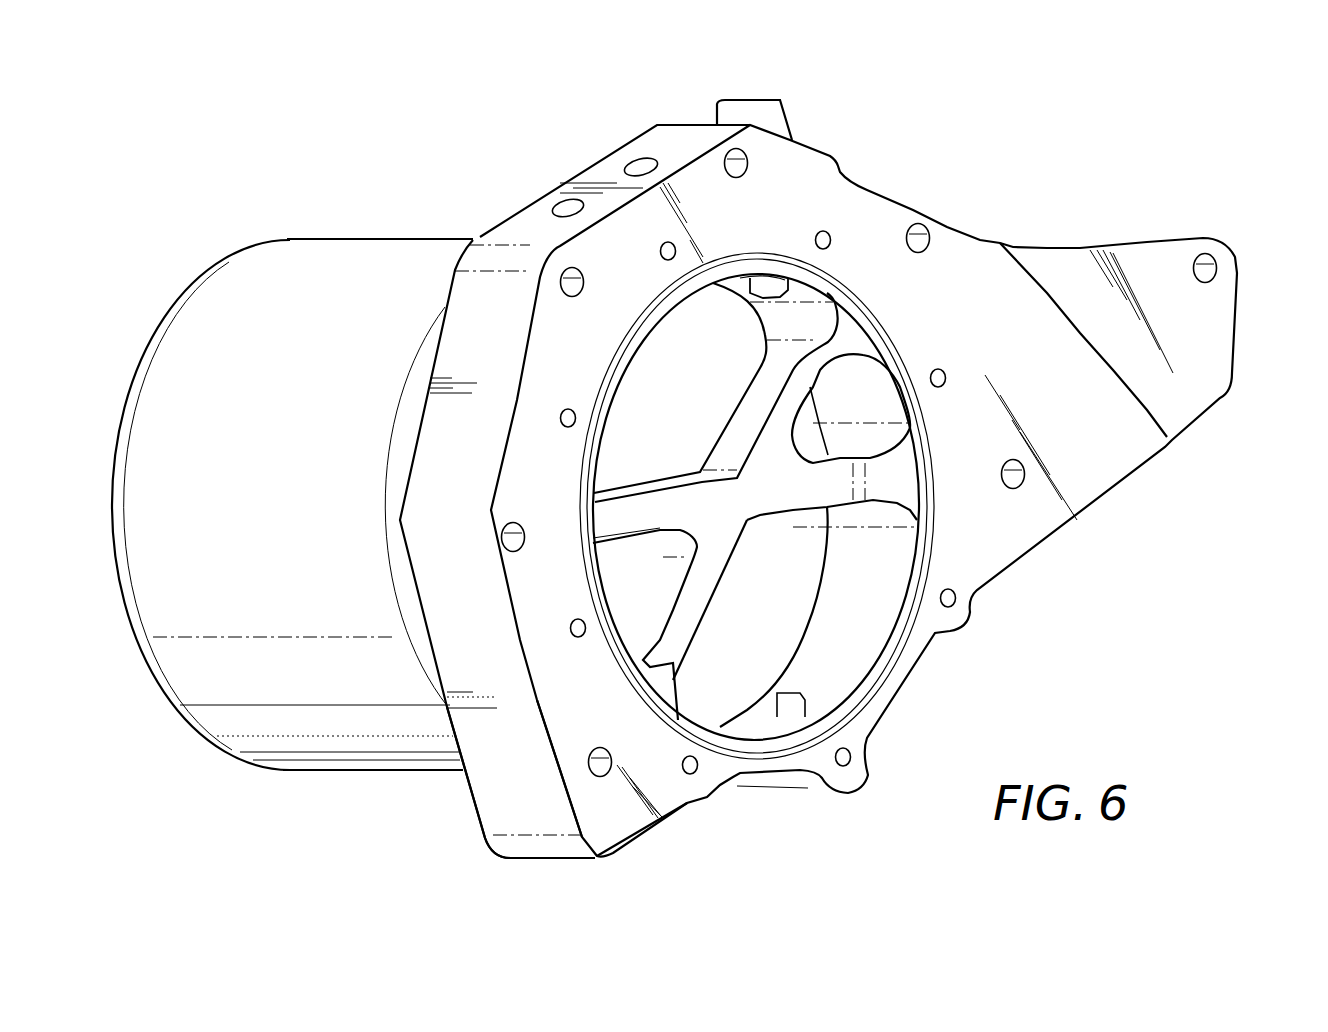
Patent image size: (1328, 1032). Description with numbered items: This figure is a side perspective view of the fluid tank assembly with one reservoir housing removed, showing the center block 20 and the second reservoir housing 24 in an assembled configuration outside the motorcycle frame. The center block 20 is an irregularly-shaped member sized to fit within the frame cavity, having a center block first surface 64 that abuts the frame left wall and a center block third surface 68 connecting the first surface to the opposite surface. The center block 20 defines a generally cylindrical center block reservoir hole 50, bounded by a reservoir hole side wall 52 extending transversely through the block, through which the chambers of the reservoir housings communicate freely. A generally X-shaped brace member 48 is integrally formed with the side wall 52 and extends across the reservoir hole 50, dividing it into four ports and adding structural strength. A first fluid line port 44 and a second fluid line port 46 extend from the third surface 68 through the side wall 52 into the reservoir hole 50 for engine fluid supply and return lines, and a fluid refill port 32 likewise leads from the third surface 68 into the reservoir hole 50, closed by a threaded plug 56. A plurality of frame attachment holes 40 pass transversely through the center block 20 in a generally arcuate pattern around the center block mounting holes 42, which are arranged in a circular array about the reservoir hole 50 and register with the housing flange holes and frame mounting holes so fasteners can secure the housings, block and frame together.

The center block 20 is at (667, 790).
The second reservoir housing 24 is at (272, 308).
The fluid refill port 32 is at (783, 290).
The frame attachment holes 40 is at (737, 165).
The center block mounting holes 42 is at (663, 250).
The first fluid line port 44 is at (565, 205).
The second fluid line port 46 is at (639, 165).
The brace member 48 is at (762, 400).
The center block reservoir hole 50 is at (773, 633).
The reservoir hole side wall 52 is at (805, 705).
The threaded plug 56 is at (790, 123).
The center block first surface 64 is at (600, 818).
The center block third surface 68 is at (513, 802).